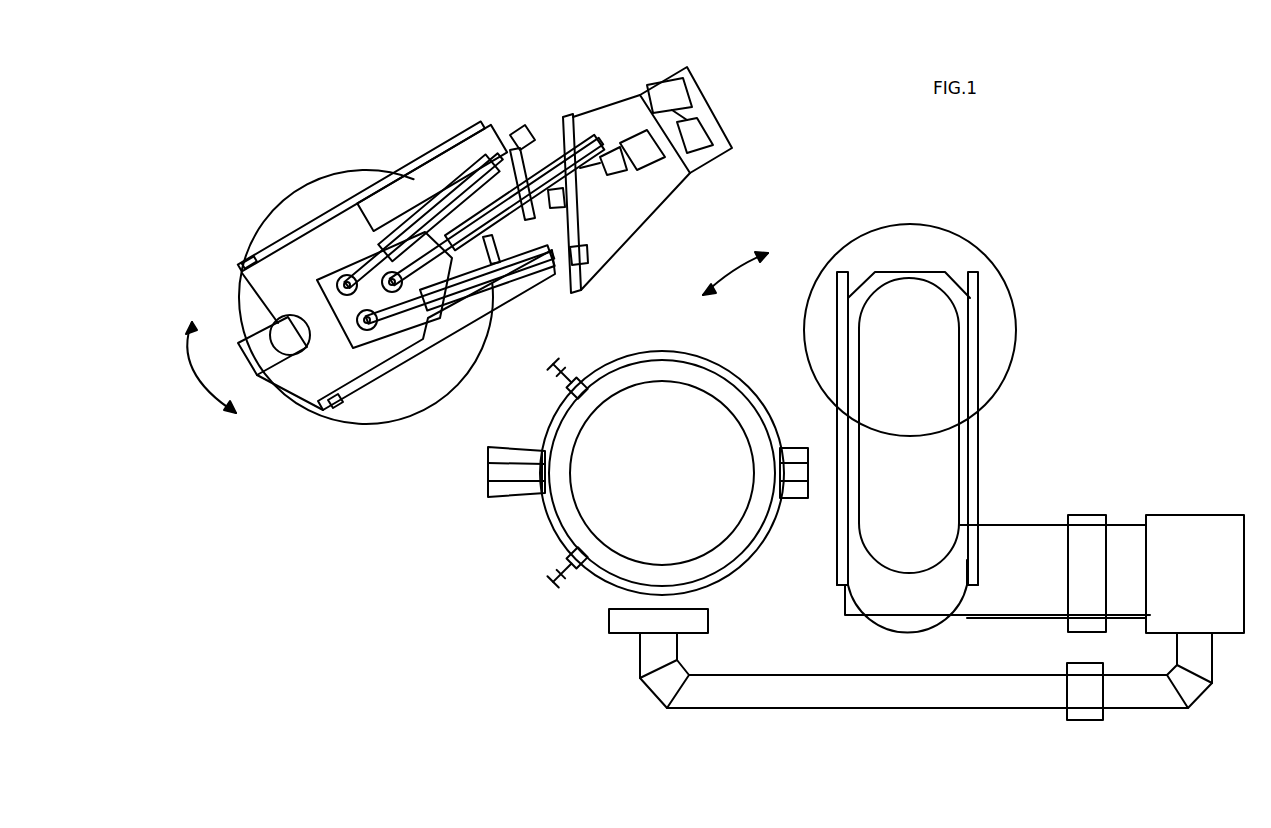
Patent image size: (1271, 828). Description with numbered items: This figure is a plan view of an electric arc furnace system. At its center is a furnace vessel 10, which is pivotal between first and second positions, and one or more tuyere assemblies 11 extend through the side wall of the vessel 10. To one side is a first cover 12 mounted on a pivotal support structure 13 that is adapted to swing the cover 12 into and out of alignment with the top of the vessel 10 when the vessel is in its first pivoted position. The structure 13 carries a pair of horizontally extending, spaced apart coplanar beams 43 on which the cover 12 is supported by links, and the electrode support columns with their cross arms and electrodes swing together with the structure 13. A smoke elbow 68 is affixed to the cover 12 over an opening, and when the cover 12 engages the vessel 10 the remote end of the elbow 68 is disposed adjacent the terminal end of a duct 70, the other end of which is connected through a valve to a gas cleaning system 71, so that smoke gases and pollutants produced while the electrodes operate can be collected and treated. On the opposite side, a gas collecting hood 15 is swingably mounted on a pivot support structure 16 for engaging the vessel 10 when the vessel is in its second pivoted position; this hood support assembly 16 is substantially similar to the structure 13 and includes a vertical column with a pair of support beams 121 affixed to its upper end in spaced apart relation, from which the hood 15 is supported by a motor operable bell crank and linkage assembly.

The furnace vessel 10 is at (718, 342).
The tuyere assemblies 11 is at (578, 388).
The first cover 12 is at (268, 215).
The pivotal support structure 13 is at (520, 322).
The gas collecting hood 15 is at (1017, 303).
The pivot support structure 16 is at (972, 500).
The beams 43 is at (362, 202).
The smoke elbow 68 is at (240, 370).
The duct 70 is at (708, 620).
The gas cleaning system 71 is at (1193, 515).
The support beams 121 is at (838, 432).